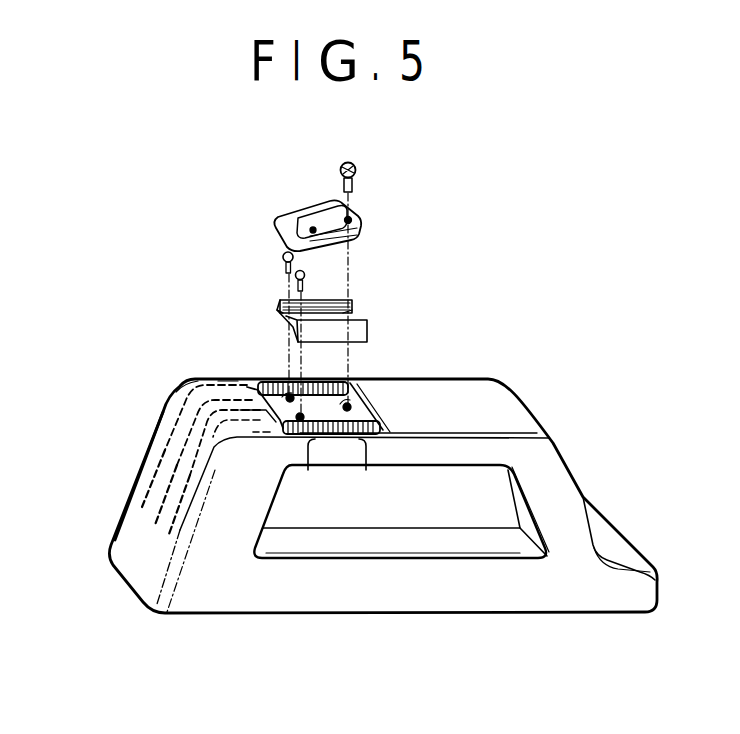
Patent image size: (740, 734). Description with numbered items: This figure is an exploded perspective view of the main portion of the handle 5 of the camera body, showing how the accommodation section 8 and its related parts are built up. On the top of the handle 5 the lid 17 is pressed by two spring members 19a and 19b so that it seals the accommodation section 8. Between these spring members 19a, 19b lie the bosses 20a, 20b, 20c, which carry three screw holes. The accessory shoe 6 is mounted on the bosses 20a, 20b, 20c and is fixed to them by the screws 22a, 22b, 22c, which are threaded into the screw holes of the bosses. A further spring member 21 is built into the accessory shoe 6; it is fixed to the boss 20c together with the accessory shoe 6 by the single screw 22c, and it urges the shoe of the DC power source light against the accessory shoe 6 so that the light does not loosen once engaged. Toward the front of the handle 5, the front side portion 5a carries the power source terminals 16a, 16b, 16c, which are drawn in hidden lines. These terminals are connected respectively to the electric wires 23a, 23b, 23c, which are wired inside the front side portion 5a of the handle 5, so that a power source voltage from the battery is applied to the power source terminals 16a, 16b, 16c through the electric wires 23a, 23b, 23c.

The handle 5 is at (526, 421).
The front side portion of the handle 5a is at (143, 461).
The accessory shoe 6 is at (370, 337).
The accommodation section 8 is at (177, 364).
The power source terminal 16a is at (178, 381).
The power source terminal 16b is at (170, 402).
The power source terminal 16c is at (163, 424).
The lid 17 is at (217, 378).
The spring member 19a is at (336, 380).
The spring member 19b is at (366, 469).
The boss 20a is at (268, 382).
The boss 20b is at (308, 469).
The boss 20c is at (352, 405).
The spring member 21 is at (358, 218).
The screw 22a is at (283, 256).
The screw 22b is at (303, 275).
The screw 22c is at (357, 162).
The electric wire 23a is at (132, 488).
The electric wire 23b is at (150, 520).
The electric wire 23c is at (163, 538).